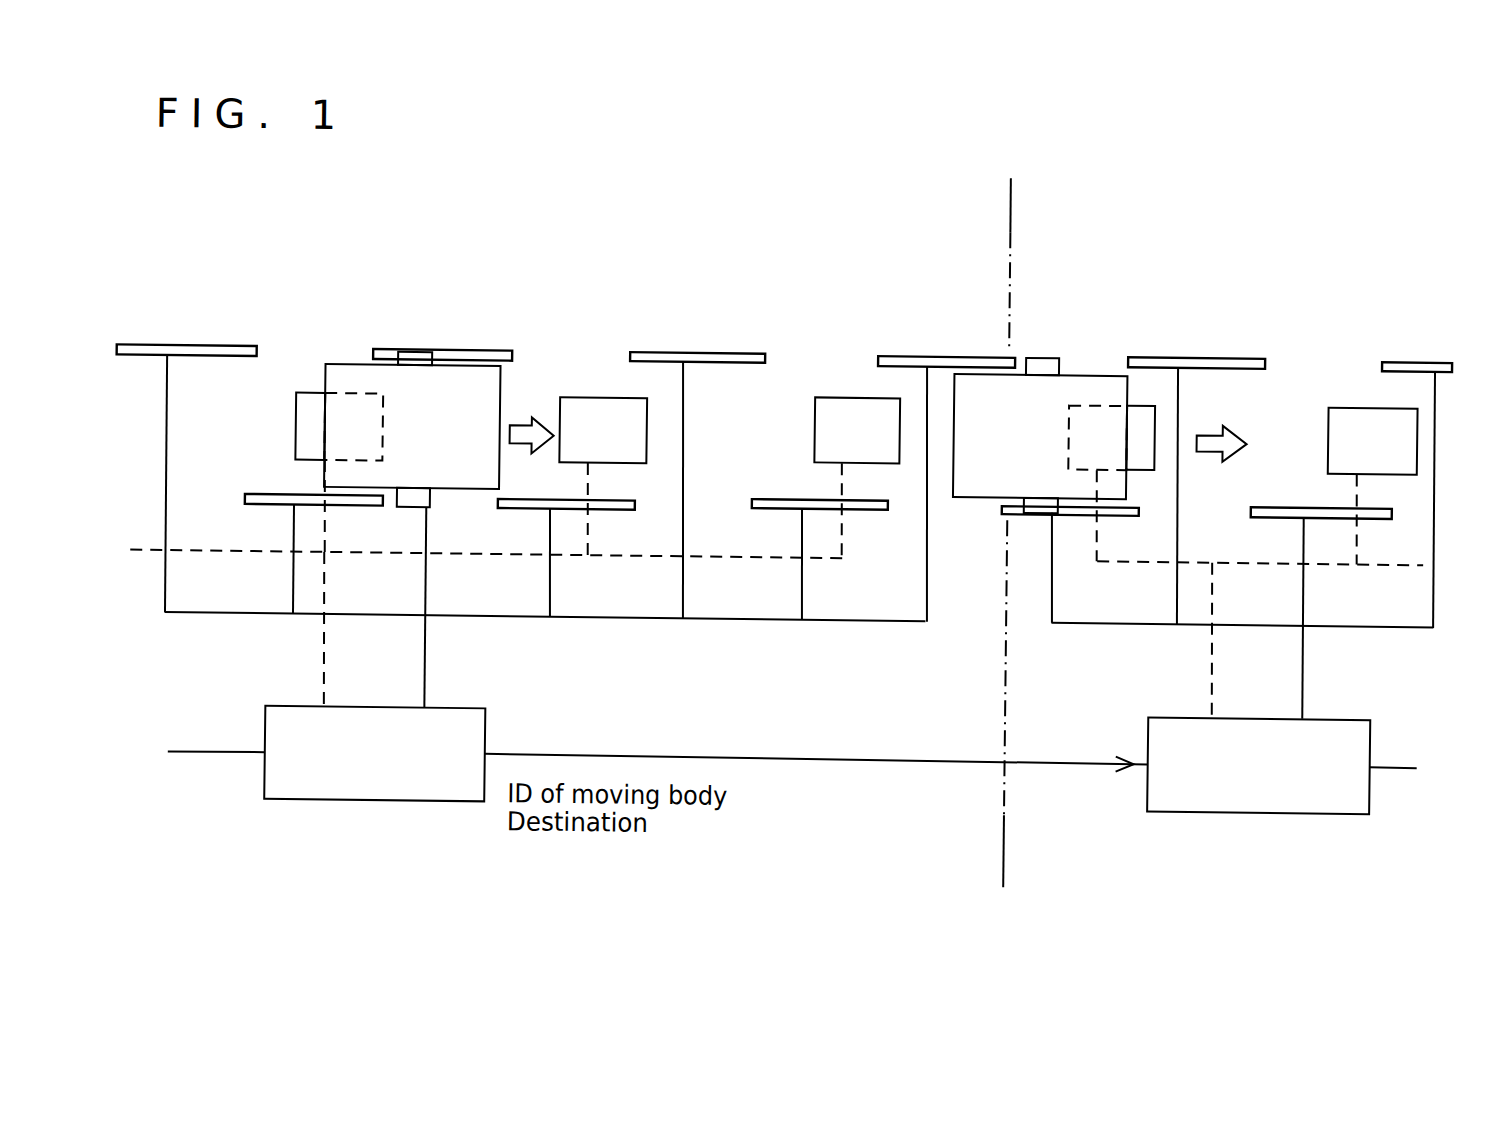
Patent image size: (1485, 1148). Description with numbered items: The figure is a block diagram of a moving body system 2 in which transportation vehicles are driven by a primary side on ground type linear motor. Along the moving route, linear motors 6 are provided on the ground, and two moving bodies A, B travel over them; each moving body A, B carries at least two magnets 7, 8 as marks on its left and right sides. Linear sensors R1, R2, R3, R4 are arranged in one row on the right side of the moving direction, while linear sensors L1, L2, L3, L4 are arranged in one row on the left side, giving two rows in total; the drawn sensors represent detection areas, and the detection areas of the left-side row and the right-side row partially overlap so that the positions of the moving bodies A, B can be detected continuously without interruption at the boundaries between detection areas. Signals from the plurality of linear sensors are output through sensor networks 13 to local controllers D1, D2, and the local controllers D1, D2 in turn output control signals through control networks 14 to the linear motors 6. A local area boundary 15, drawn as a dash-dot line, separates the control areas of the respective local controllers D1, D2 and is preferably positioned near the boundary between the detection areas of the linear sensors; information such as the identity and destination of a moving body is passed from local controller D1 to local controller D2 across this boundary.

The moving body system 2 is at (829, 927).
The linear motor 6 is at (294, 432).
The magnet 7 is at (409, 354).
The magnet 8 is at (409, 511).
The sensor network 13 is at (614, 620).
The control network 14 is at (326, 660).
The local area boundary 15 is at (1008, 215).
The linear sensor L1 is at (194, 351).
The linear sensor L2 is at (467, 352).
The linear sensor L3 is at (712, 352).
The linear sensor L4 is at (899, 353).
The linear sensor R1 is at (1110, 511).
The linear sensor R2 is at (270, 511).
The linear sensor R3 is at (527, 511).
The linear sensor R4 is at (780, 509).
The moving body A is at (497, 398).
The moving body B is at (1088, 372).
The local controller D1 is at (326, 753).
The local controller D2 is at (950, 761).